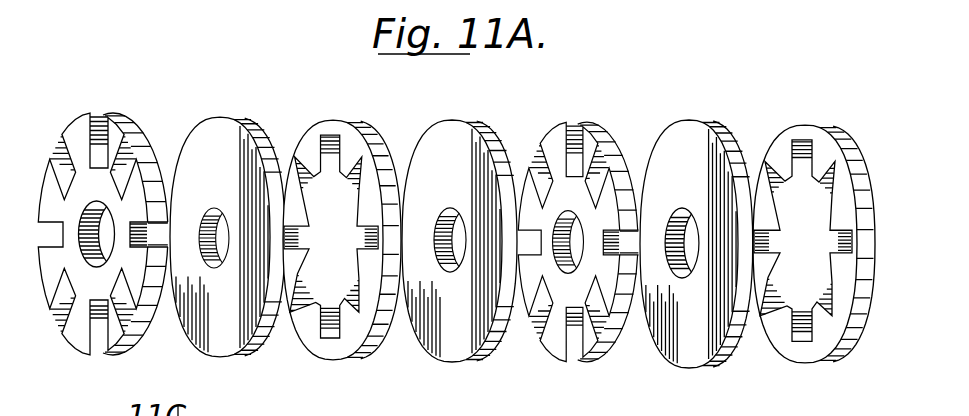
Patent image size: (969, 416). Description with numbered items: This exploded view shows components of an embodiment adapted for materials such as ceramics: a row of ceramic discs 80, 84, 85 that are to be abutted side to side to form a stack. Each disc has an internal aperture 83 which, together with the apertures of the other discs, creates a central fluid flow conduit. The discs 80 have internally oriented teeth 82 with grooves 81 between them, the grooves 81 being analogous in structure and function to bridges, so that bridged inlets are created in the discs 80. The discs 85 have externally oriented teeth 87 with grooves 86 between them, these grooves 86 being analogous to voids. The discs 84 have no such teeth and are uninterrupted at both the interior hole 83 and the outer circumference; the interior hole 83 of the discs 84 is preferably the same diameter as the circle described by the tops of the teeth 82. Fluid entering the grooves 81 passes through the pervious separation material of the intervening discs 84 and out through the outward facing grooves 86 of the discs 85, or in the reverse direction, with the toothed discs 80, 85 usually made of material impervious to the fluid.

The ceramic disc 80 is at (318, 110).
The grooves 81 is at (342, 128).
The teeth 82 is at (840, 207).
The internal aperture 83 is at (85, 211).
The ceramic disc 84 is at (211, 102).
The ceramic disc 85 is at (71, 112).
The grooves 86 is at (100, 337).
The teeth 87 is at (118, 133).